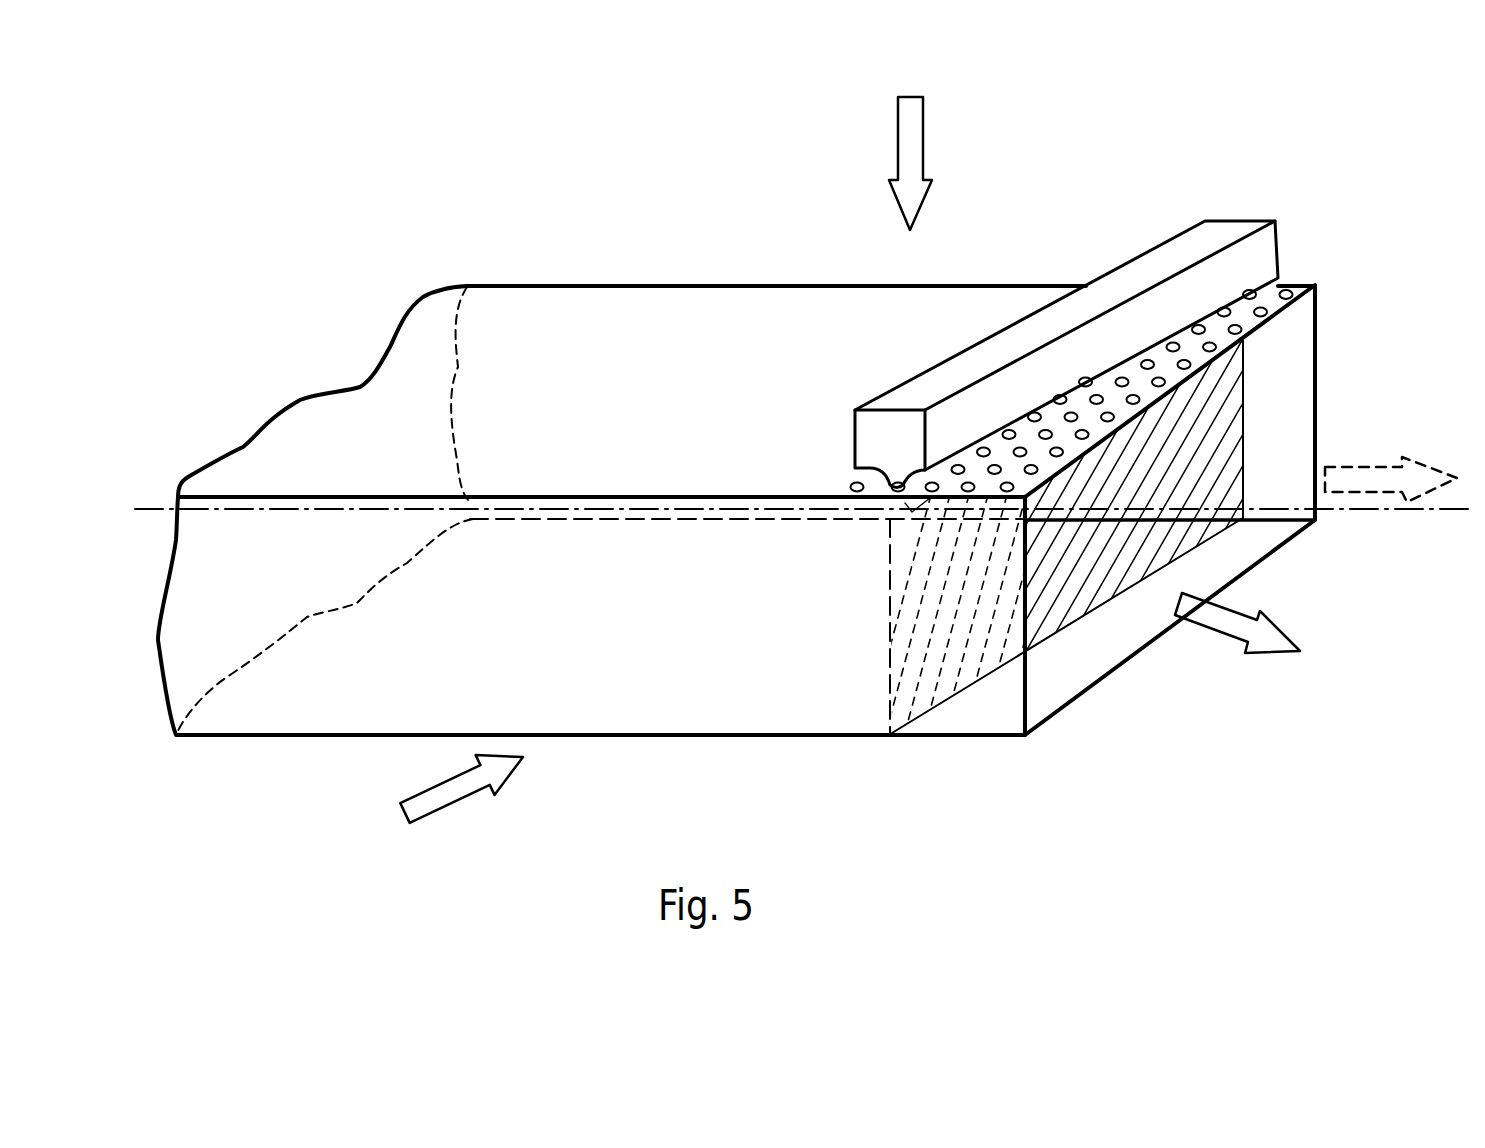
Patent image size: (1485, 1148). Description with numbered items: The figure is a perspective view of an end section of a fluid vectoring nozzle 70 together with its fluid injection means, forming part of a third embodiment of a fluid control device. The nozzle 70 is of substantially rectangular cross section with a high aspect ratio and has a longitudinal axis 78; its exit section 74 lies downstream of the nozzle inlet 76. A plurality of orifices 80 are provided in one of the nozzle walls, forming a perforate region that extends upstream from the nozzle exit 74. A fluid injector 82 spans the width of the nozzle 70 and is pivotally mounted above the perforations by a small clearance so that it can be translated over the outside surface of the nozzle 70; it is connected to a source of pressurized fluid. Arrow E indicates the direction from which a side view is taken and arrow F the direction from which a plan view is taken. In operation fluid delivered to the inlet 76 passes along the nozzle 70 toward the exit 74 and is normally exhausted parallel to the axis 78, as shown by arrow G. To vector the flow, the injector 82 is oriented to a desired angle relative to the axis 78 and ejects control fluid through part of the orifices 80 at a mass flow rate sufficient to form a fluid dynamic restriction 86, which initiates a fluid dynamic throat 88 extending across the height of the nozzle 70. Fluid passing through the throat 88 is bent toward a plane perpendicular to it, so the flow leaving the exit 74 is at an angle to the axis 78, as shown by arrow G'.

The fluid vectoring nozzle 70 is at (614, 241).
The exit section 74 is at (1348, 432).
The nozzle inlet 76 is at (224, 430).
The longitudinal axis 78 is at (135, 512).
The orifices 80 is at (1240, 332).
The fluid injector 82 is at (1246, 220).
The fluid dynamic restriction 86 is at (890, 517).
The fluid dynamic throat 88 is at (1065, 618).
The arrow E is at (405, 818).
The arrow F is at (898, 137).
The arrow G is at (1393, 460).
The arrow G' is at (1237, 650).